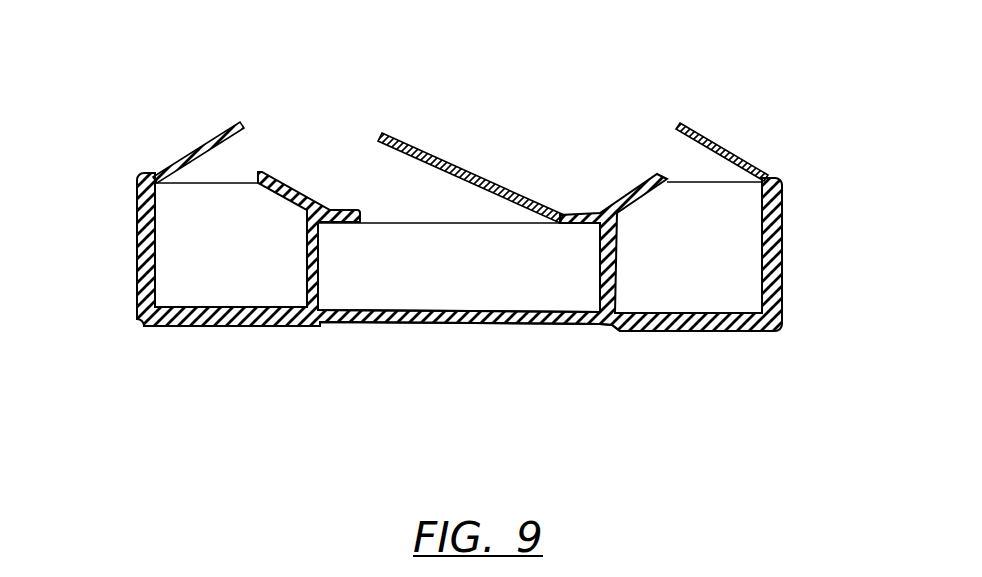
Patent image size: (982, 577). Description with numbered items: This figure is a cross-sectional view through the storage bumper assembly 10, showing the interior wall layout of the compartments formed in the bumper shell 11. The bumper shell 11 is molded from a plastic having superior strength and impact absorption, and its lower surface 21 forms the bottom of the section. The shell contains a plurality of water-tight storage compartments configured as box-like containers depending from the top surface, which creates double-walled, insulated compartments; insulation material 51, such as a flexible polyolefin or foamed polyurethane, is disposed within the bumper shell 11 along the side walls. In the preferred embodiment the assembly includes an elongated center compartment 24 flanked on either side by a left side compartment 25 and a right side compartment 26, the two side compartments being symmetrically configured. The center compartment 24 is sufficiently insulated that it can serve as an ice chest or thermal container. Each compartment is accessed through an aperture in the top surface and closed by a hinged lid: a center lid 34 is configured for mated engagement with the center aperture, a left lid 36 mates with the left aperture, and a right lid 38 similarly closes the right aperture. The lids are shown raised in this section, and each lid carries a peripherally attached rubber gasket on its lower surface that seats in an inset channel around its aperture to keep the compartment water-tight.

The bumper assembly 10 is at (475, 288).
The bumper shell 11 is at (783, 245).
The lower surface 21 is at (540, 322).
The center compartment 24 is at (460, 275).
The left side compartment 25 is at (675, 268).
The right side compartment 26 is at (227, 250).
The center lid 34 is at (428, 157).
The left lid 36 is at (722, 142).
The right lid 38 is at (187, 151).
The insulation material 51 is at (140, 218).